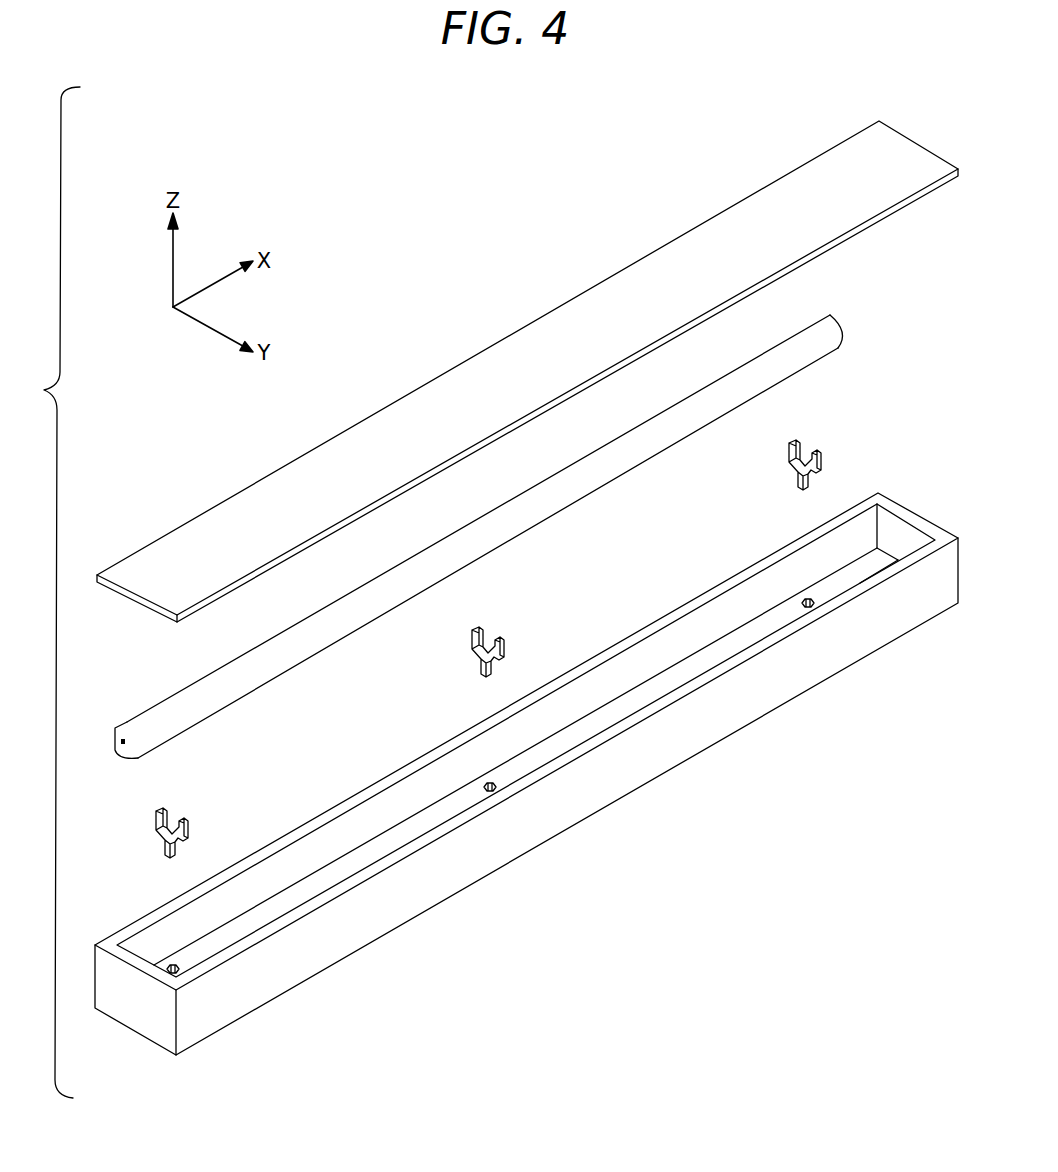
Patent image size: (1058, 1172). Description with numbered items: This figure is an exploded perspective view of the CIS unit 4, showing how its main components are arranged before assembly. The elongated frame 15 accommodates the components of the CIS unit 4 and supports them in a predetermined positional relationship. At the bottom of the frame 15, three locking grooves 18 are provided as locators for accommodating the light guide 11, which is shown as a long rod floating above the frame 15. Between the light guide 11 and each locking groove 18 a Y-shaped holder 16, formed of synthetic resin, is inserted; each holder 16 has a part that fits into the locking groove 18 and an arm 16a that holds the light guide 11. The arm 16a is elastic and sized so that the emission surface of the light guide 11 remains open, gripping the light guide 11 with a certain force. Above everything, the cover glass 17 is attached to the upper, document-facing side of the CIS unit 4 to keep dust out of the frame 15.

The CIS unit 4 is at (631, 846).
The light guide 11 is at (137, 720).
The frame 15 is at (323, 953).
The holder 16 is at (484, 627).
The arm 16a is at (154, 823).
The cover glass 17 is at (553, 325).
The locking groove 18 is at (173, 965).